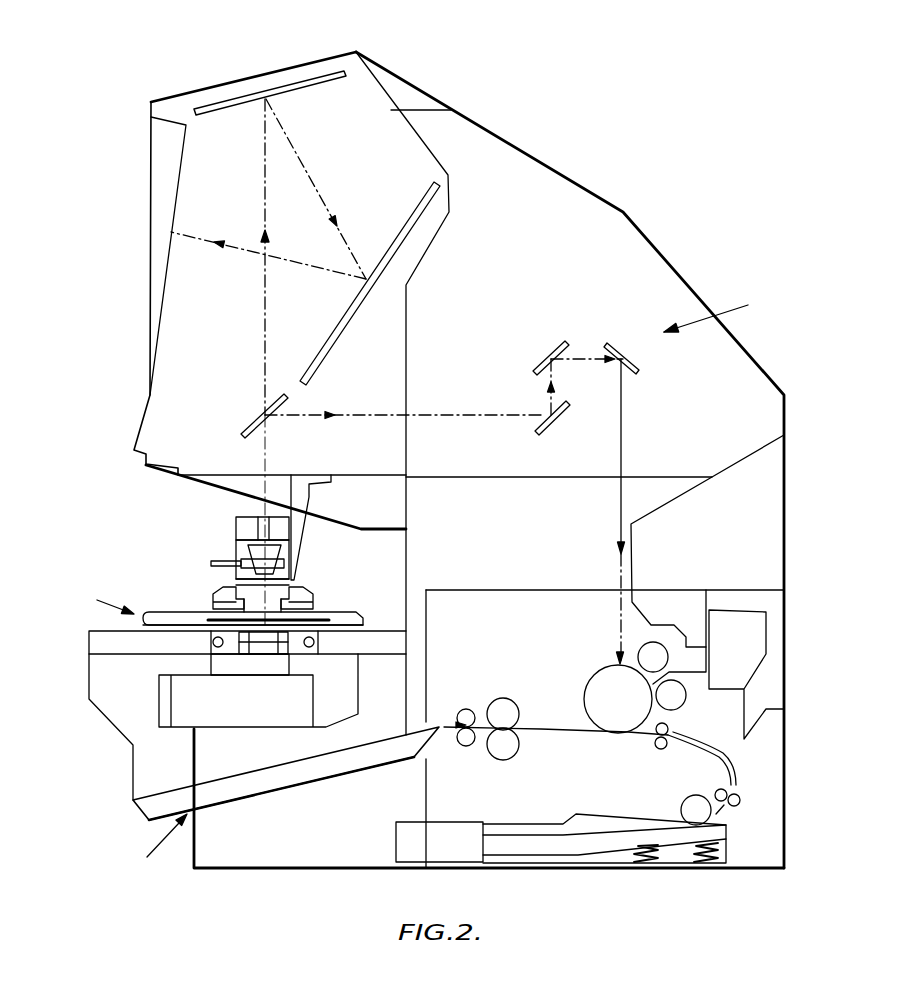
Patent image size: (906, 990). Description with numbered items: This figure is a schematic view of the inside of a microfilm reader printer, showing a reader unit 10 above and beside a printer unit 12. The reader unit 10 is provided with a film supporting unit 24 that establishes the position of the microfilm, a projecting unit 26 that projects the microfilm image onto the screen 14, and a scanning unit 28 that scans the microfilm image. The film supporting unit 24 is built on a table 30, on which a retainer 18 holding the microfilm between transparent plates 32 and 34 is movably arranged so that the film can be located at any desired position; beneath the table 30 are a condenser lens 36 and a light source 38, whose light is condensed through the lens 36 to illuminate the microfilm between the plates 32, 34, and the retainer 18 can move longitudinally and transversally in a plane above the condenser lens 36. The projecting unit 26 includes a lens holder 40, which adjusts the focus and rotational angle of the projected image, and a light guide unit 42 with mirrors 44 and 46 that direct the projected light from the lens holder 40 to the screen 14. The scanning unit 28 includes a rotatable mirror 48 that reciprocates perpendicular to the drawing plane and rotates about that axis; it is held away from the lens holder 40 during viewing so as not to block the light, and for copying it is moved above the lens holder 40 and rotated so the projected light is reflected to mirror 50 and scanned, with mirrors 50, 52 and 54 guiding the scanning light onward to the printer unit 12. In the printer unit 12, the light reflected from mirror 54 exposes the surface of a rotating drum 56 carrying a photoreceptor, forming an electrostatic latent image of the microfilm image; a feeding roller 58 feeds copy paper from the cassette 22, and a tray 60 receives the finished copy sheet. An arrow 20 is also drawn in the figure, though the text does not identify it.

The reader unit 10 is at (658, 280).
The printer unit 12 is at (763, 823).
The screen 14 is at (157, 205).
The retainer 18 is at (222, 616).
The discharge direction 20 is at (160, 848).
The cassette 22 is at (570, 842).
The film supporting unit 24 is at (103, 602).
The projecting unit 26 is at (247, 68).
The scanning unit 28 is at (710, 311).
The table 30 is at (95, 628).
The transparent plate 32 is at (152, 611).
The transparent plate 34 is at (165, 611).
The condenser lens 36 is at (262, 645).
The light source 38 is at (180, 715).
The lens holder 40 is at (307, 575).
The light guide unit 42 is at (303, 100).
The mirror 44 is at (333, 77).
The mirror 46 is at (408, 213).
The rotatable mirror 48 is at (256, 427).
The mirror 50 is at (567, 420).
The mirror 52 is at (546, 349).
The mirror 54 is at (640, 365).
The rotating drum 56 is at (593, 685).
The feeding roller 58 is at (683, 806).
The tray 60 is at (300, 772).